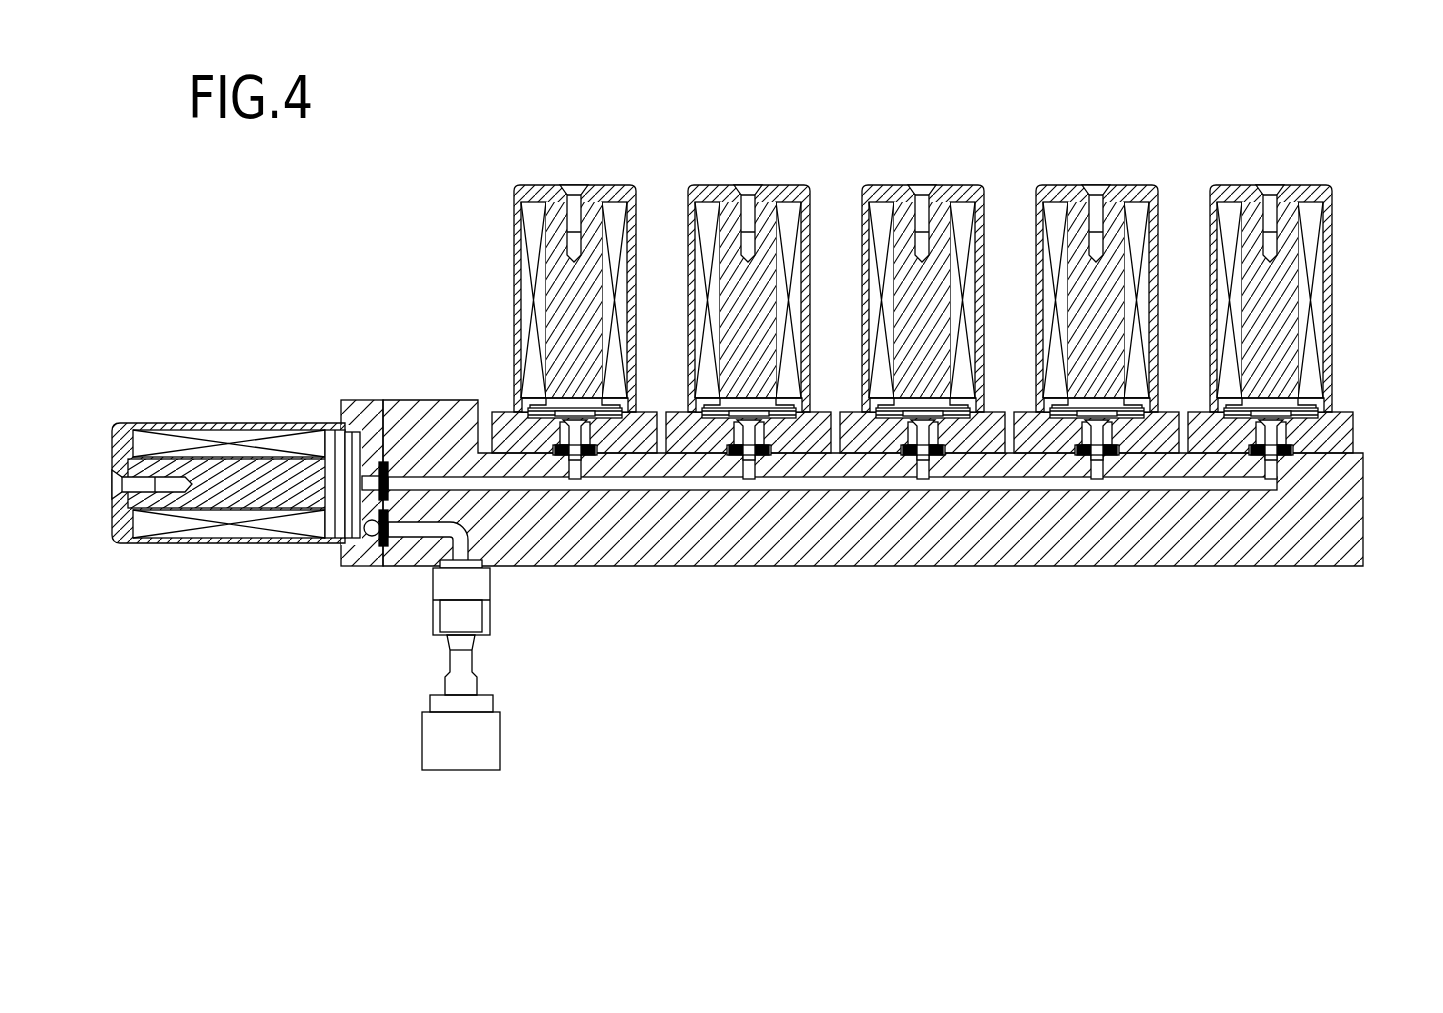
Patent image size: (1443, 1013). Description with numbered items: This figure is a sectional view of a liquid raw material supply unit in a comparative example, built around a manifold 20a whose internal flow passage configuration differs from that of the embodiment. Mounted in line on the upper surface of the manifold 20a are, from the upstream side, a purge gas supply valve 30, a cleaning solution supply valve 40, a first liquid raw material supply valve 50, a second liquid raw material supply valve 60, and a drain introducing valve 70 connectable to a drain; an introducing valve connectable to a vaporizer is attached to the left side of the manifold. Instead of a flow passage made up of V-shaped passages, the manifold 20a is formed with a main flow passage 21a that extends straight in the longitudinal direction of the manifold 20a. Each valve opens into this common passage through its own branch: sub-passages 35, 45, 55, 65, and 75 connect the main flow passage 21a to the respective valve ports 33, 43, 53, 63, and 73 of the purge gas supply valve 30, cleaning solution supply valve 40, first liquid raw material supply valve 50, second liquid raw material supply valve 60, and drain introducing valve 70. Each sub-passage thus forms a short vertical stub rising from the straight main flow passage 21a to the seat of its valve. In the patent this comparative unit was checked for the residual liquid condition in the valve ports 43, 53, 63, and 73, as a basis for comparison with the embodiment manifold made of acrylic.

The drain introducing valve 70 is at (608, 187).
The second liquid raw material supply valve 60 is at (782, 187).
The first liquid raw material supply valve 50 is at (956, 187).
The cleaning solution supply valve 40 is at (1130, 187).
The purge gas supply valve 30 is at (1304, 187).
The valve port 73 is at (597, 447).
The valve port 63 is at (771, 447).
The valve port 53 is at (945, 447).
The valve port 43 is at (1119, 447).
The valve port 33 is at (1293, 447).
The sub-passage 75 is at (577, 463).
The sub-passage 65 is at (751, 463).
The sub-passage 55 is at (925, 463).
The sub-passage 45 is at (1099, 463).
The sub-passage 35 is at (1275, 463).
The main flow passage 21a is at (884, 484).
The manifold 20a is at (1355, 505).